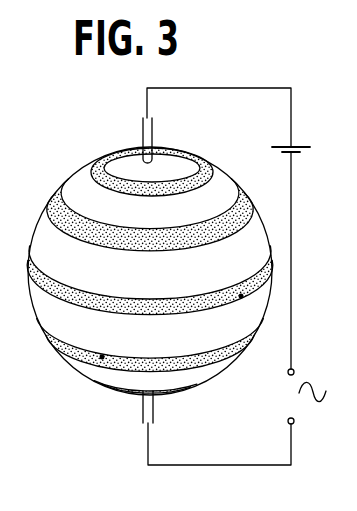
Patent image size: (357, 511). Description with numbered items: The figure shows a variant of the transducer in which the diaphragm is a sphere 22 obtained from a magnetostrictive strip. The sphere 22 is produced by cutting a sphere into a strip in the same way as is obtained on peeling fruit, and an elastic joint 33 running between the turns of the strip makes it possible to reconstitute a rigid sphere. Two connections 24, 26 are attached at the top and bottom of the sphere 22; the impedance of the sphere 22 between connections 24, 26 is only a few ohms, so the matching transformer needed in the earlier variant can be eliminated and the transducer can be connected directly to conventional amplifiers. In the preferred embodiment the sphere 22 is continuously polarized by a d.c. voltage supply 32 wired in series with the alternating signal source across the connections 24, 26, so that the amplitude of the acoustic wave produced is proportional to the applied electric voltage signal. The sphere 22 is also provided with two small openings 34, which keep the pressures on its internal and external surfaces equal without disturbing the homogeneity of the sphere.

The sphere 22 is at (49, 349).
The connection 24 is at (143, 135).
The connection 26 is at (153, 408).
The d.c. voltage supply 32 is at (303, 163).
The elastic joint 33 is at (58, 191).
The openings 34 is at (100, 359).